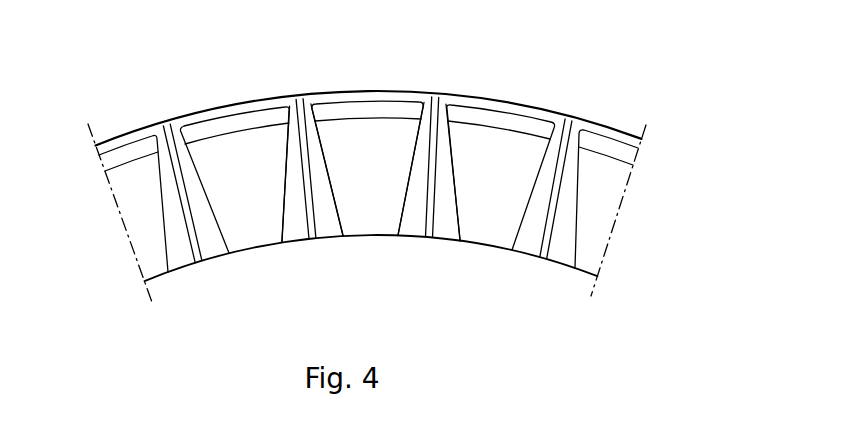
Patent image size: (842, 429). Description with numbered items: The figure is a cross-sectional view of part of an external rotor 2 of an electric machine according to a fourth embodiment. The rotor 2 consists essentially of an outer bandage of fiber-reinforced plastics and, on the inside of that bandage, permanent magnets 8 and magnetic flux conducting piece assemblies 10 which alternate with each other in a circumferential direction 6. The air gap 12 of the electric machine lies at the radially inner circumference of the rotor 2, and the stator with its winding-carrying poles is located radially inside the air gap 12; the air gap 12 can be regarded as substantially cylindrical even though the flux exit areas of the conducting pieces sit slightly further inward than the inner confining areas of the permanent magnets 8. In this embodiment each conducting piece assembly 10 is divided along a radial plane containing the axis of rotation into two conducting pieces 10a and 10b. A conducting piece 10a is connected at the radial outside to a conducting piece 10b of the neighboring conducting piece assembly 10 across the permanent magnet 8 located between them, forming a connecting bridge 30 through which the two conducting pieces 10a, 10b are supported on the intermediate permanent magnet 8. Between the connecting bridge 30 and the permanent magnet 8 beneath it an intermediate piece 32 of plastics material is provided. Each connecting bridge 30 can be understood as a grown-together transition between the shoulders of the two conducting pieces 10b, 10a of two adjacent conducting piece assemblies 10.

The rotor 2 is at (642, 152).
The circumferential direction 6 is at (628, 190).
The permanent magnet 8 is at (196, 175).
The magnetic flux conducting piece assembly 10 is at (312, 246).
The conducting piece 10a is at (291, 234).
The conducting piece 10b is at (333, 232).
The air gap 12 is at (186, 279).
The connecting bridge 30 is at (336, 98).
The intermediate piece 32 is at (396, 110).